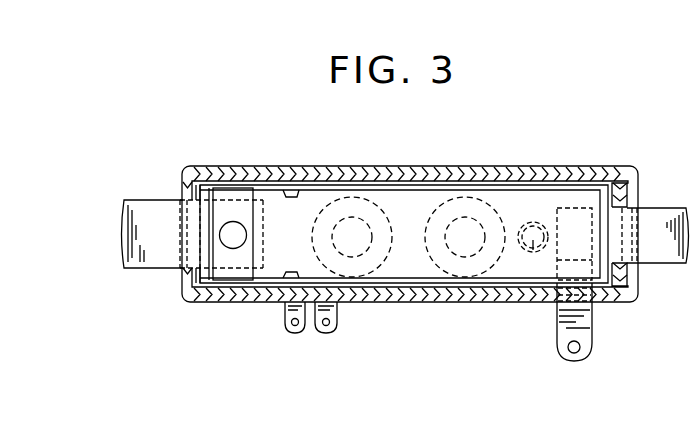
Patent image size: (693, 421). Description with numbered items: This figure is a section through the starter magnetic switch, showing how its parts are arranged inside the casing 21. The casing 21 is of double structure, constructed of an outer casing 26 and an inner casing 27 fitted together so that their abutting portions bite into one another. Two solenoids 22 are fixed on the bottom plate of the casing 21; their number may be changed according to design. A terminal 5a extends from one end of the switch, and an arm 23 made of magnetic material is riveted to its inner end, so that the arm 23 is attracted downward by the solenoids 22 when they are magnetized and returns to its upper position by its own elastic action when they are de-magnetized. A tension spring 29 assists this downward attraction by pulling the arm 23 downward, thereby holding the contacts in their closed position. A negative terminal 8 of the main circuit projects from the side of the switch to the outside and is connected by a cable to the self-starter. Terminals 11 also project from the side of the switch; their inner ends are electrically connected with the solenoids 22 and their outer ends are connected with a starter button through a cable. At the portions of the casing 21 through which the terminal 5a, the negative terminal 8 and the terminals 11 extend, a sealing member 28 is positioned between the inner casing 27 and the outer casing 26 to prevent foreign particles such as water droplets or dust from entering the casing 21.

The terminal 5a is at (150, 203).
The negative terminal 8 is at (562, 338).
The terminals 11 is at (300, 327).
The casing 21 is at (634, 128).
The solenoids 22 is at (343, 197).
The arm 23 is at (270, 197).
The outer casing 26 is at (563, 173).
The inner casing 27 is at (598, 179).
The sealing member 28 is at (197, 240).
The tension spring 29 is at (533, 250).